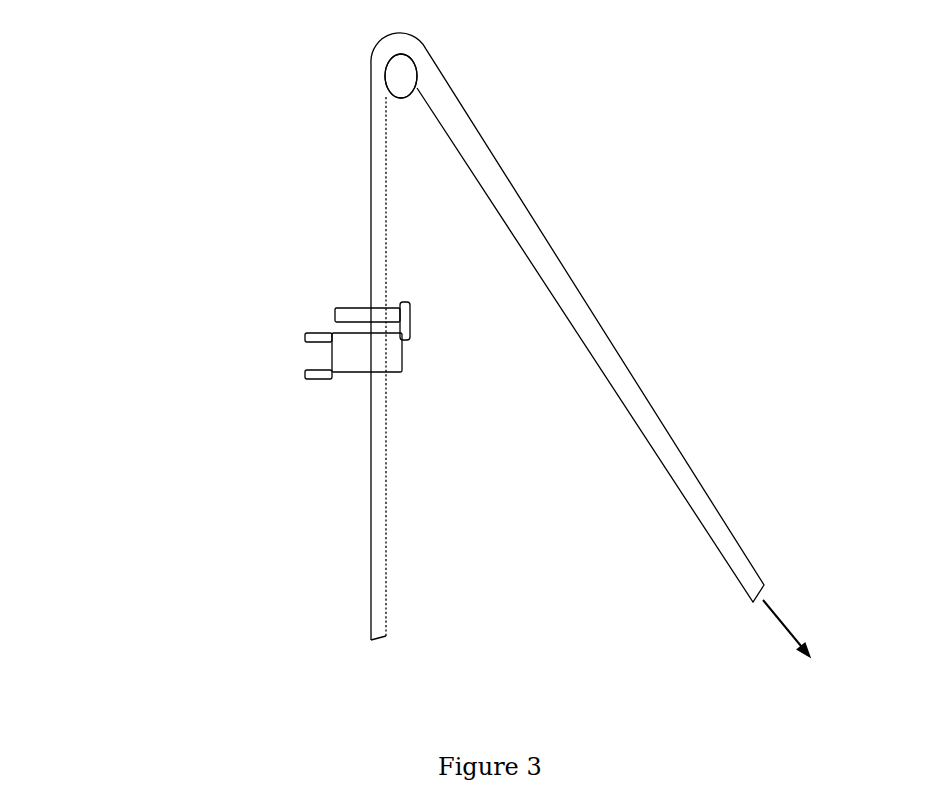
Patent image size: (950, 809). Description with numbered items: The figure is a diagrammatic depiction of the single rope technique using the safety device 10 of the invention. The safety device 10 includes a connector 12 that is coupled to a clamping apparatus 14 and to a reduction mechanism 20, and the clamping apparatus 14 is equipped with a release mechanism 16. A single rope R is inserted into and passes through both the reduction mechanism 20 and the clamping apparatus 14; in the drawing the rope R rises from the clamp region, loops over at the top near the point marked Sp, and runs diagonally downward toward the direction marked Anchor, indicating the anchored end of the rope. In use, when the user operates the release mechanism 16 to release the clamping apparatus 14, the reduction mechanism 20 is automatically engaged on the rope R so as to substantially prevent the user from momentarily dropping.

The safety device 10 is at (117, 84).
The connector 12 is at (403, 318).
The clamping apparatus 14 is at (373, 360).
The release mechanism 16 is at (305, 334).
The reduction mechanism 20 is at (348, 313).
The single rope R is at (533, 232).
The spring loop Sp is at (405, 78).
The anchor direction Anchor is at (817, 646).